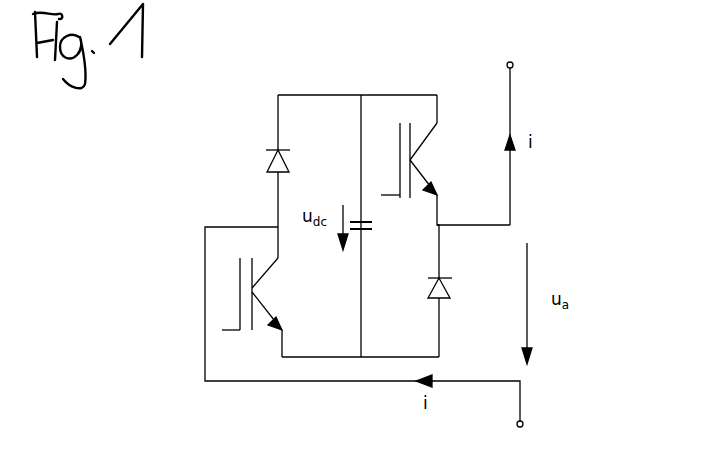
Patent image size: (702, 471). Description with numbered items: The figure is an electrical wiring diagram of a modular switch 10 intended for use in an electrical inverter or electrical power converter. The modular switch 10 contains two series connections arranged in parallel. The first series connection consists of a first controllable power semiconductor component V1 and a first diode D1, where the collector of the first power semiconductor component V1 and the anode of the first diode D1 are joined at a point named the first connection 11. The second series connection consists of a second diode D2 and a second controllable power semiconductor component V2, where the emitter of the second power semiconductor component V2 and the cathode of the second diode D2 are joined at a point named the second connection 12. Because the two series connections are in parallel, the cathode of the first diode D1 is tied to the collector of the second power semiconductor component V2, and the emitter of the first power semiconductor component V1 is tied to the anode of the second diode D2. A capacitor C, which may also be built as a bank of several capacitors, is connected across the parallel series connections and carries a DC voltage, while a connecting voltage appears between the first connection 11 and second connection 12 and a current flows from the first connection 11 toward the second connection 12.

The modular switch 10 is at (150, 281).
The first connection 11 is at (524, 425).
The second connection 12 is at (513, 62).
The first diode D1 is at (257, 162).
The second diode D2 is at (418, 290).
The first controllable power semiconductor component V1 is at (252, 312).
The second controllable power semiconductor component V2 is at (409, 177).
The capacitor C is at (364, 240).